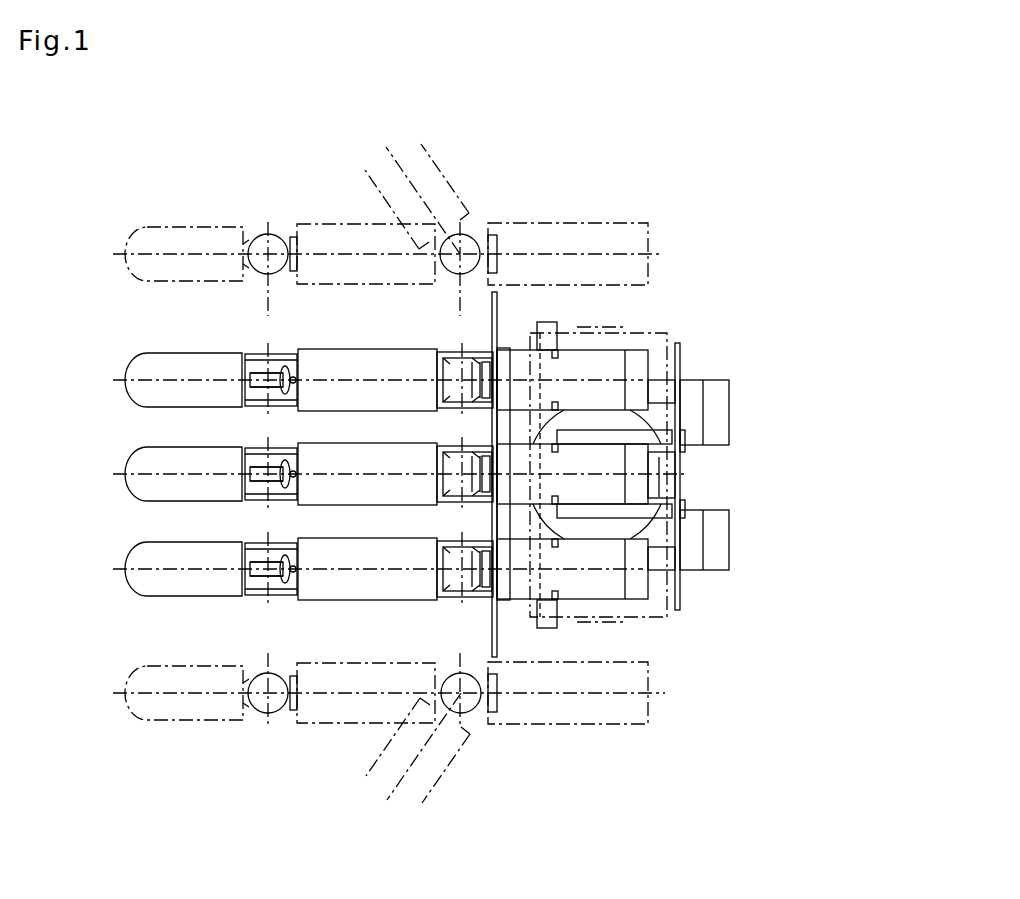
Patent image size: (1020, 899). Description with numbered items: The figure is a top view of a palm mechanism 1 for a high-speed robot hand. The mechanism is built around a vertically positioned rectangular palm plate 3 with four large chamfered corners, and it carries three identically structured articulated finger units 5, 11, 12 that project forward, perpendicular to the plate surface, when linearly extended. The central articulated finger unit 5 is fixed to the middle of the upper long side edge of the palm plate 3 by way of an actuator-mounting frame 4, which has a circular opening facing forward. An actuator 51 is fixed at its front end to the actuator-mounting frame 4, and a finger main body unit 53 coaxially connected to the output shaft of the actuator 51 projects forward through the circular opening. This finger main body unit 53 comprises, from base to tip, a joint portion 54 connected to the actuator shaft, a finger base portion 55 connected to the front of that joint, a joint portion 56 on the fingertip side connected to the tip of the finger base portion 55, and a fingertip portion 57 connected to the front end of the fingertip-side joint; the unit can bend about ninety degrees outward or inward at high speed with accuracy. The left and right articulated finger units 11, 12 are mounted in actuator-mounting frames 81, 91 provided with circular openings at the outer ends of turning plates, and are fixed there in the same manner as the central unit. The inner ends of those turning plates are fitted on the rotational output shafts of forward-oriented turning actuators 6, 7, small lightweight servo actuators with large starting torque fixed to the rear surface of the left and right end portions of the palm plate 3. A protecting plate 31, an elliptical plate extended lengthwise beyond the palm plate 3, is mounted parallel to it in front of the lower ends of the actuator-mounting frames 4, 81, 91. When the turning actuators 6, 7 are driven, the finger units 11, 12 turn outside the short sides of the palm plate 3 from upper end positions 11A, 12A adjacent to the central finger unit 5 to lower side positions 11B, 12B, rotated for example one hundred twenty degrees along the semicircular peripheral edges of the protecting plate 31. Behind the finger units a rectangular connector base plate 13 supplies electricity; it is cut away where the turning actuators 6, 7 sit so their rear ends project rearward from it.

The palm mechanism 1 is at (617, 183).
The palm plate 3 is at (625, 478).
The actuator-mounting frame 4 is at (497, 462).
The articulated finger unit 5 is at (659, 454).
The turning actuator 6 is at (731, 552).
The turning actuator 7 is at (731, 402).
The articulated finger unit 11 is at (386, 751).
The upper end position 11A is at (349, 763).
The lower side position 11B is at (542, 726).
The articulated finger unit 12 is at (386, 229).
The upper end position 12A is at (347, 195).
The lower side position 12B is at (213, 223).
The connector base plate 13 is at (682, 600).
The protecting plate 31 is at (491, 333).
The actuator 51 is at (607, 489).
The finger main body unit 53 is at (252, 474).
The joint portion 54 is at (455, 473).
The finger base portion 55 is at (320, 458).
The joint portion 56 is at (257, 452).
The fingertip portion 57 is at (172, 457).
The actuator-mounting frame 81 is at (503, 588).
The actuator-mounting frame 91 is at (547, 323).